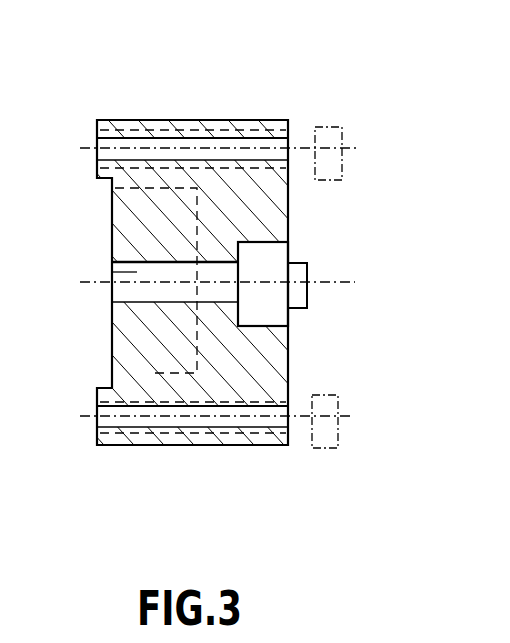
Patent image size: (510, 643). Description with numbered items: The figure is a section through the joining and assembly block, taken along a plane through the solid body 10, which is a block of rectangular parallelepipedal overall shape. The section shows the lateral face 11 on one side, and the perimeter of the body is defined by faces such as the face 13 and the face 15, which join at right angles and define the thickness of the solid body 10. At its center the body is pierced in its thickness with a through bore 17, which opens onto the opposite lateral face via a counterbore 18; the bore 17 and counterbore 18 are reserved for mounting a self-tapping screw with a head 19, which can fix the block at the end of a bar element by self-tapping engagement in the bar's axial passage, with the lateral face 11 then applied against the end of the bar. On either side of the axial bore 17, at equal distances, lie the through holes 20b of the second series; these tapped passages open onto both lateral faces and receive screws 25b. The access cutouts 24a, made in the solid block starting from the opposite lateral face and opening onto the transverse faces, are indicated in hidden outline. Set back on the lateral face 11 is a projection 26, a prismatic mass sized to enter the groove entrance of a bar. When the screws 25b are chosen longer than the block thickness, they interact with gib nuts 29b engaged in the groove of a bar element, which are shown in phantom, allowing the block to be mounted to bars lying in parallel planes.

The solid body 10 is at (147, 470).
The lateral face 11 is at (285, 363).
The face 13 is at (107, 447).
The face 15 is at (138, 120).
The through bore 17 is at (112, 270).
The counterbore 18 is at (267, 262).
The self-tapping screw 19 is at (100, 280).
The through holes of the second series 20b is at (197, 445).
The access cutouts 24a is at (150, 373).
The screws 25b is at (190, 148).
The projections 26 is at (298, 300).
The gib nuts 29b is at (325, 130).